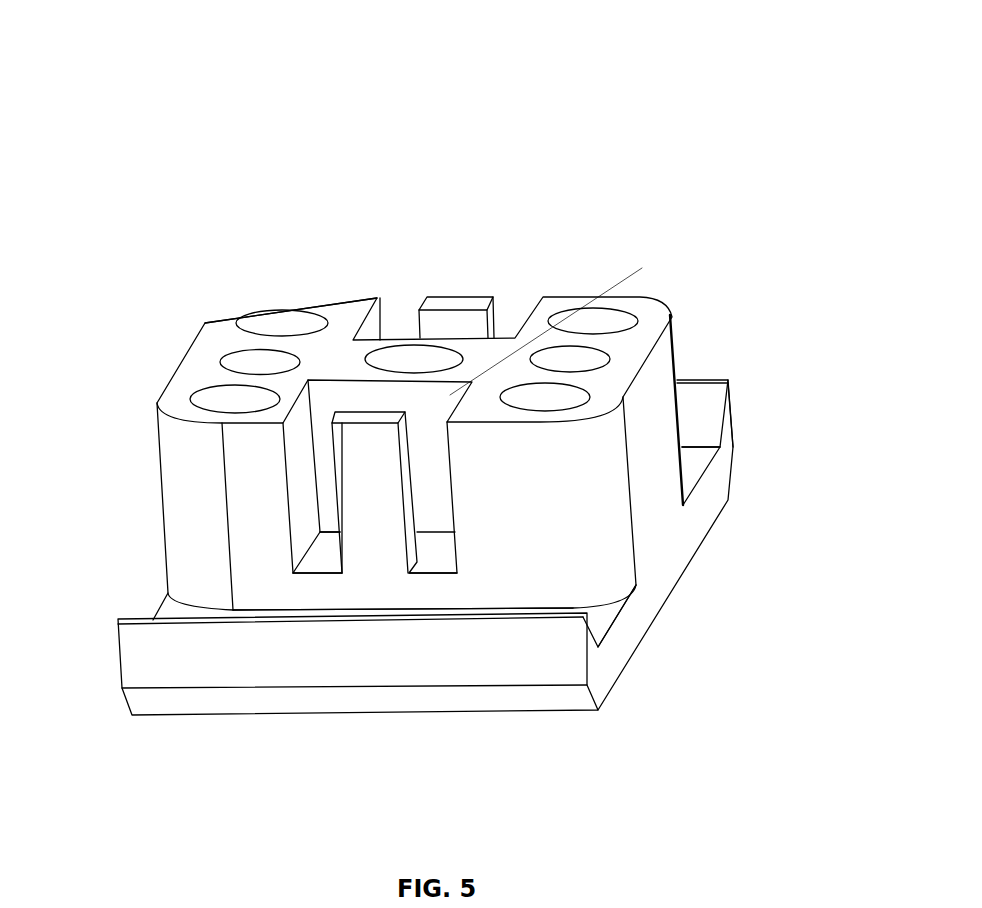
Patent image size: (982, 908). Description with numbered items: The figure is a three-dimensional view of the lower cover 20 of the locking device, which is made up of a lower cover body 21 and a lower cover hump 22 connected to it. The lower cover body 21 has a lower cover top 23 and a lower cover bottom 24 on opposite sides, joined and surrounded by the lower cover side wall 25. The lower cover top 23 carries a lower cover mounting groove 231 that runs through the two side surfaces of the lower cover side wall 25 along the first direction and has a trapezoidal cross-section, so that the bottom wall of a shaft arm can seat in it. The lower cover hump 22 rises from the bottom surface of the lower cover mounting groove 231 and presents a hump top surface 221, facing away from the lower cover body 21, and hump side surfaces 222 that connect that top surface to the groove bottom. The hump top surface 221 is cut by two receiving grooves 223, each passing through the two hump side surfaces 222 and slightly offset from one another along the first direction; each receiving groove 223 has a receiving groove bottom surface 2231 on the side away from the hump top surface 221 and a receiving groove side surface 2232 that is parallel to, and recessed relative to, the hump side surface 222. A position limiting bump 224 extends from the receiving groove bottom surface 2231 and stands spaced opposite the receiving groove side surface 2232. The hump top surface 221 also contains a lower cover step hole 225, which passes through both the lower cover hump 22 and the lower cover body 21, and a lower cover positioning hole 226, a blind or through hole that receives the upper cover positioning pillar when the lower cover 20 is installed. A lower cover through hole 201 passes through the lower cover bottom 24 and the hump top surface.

The lower cover 20 is at (430, 44).
The lower cover body 21 is at (670, 568).
The lower cover hump 22 is at (653, 513).
The lower cover top 23 is at (710, 380).
The lower cover bottom 24 is at (490, 712).
The lower cover side wall 25 is at (627, 630).
The lower cover through hole 201 is at (397, 360).
The hump top surface 221 is at (217, 328).
The hump side surface 222 is at (248, 497).
The receiving groove 223 is at (498, 338).
The receiving groove bottom surface 2231 is at (320, 562).
The receiving groove side surface 2232 is at (330, 402).
The position limiting bump 224 is at (383, 532).
The lower cover step hole 225 is at (530, 395).
The lower cover positioning hole 226 is at (278, 360).
The lower cover mounting groove 231 is at (688, 463).